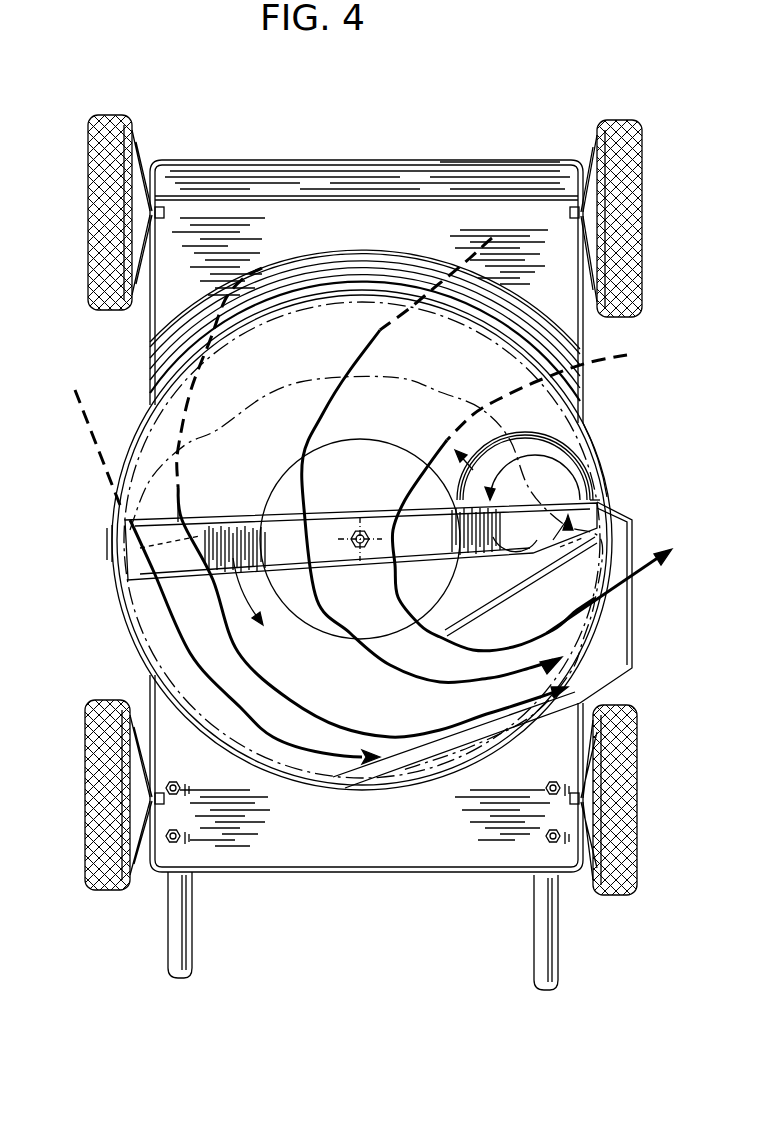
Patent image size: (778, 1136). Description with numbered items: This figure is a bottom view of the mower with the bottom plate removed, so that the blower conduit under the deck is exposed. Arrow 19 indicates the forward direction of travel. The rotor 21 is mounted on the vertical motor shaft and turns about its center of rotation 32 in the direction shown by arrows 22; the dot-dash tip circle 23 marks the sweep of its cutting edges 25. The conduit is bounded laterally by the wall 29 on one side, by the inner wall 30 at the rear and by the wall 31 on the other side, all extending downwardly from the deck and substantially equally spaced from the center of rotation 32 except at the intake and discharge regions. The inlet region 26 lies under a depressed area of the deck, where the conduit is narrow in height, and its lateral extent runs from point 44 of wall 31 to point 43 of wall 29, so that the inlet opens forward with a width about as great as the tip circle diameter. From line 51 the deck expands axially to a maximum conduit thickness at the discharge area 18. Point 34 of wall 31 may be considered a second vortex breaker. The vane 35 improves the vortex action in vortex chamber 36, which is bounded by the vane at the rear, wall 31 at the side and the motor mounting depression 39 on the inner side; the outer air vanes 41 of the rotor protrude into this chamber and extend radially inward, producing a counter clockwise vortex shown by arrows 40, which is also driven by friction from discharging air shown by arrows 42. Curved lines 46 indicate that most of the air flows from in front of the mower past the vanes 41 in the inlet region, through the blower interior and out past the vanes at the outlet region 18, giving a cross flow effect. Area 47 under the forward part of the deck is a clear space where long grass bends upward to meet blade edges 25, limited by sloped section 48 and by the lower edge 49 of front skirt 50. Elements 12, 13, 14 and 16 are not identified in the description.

The front wheels 12 is at (98, 190).
The rear wheels 13 is at (94, 784).
The handle legs 14 is at (176, 932).
The mower deck 16 is at (366, 516).
The discharge area 18 is at (634, 624).
The arrow 19 is at (364, 76).
The rotor 21 is at (326, 518).
The arrows 22 is at (250, 632).
The tip circle 23 is at (303, 316).
The cutting edges 25 is at (548, 504).
The inlet region 26 is at (437, 356).
The wall 29 is at (120, 606).
The inner wall 30 is at (333, 800).
The wall 31 is at (622, 522).
The center of rotation 32 is at (358, 548).
The second vortex breaker 34 is at (648, 546).
The vane 35 is at (518, 584).
The vortex chamber 36 is at (532, 501).
The depression 39 is at (452, 586).
The arrows 40 is at (514, 466).
The outer air vanes 41 is at (146, 545).
The arrows 42 is at (548, 638).
The point 43 is at (108, 528).
The point 44 is at (614, 502).
The curved lines 46 is at (312, 420).
The area 47 is at (302, 236).
The sloped section 48 is at (406, 266).
The lower edge 49 is at (436, 164).
The front skirt 50 is at (358, 174).
The line 51 is at (168, 522).